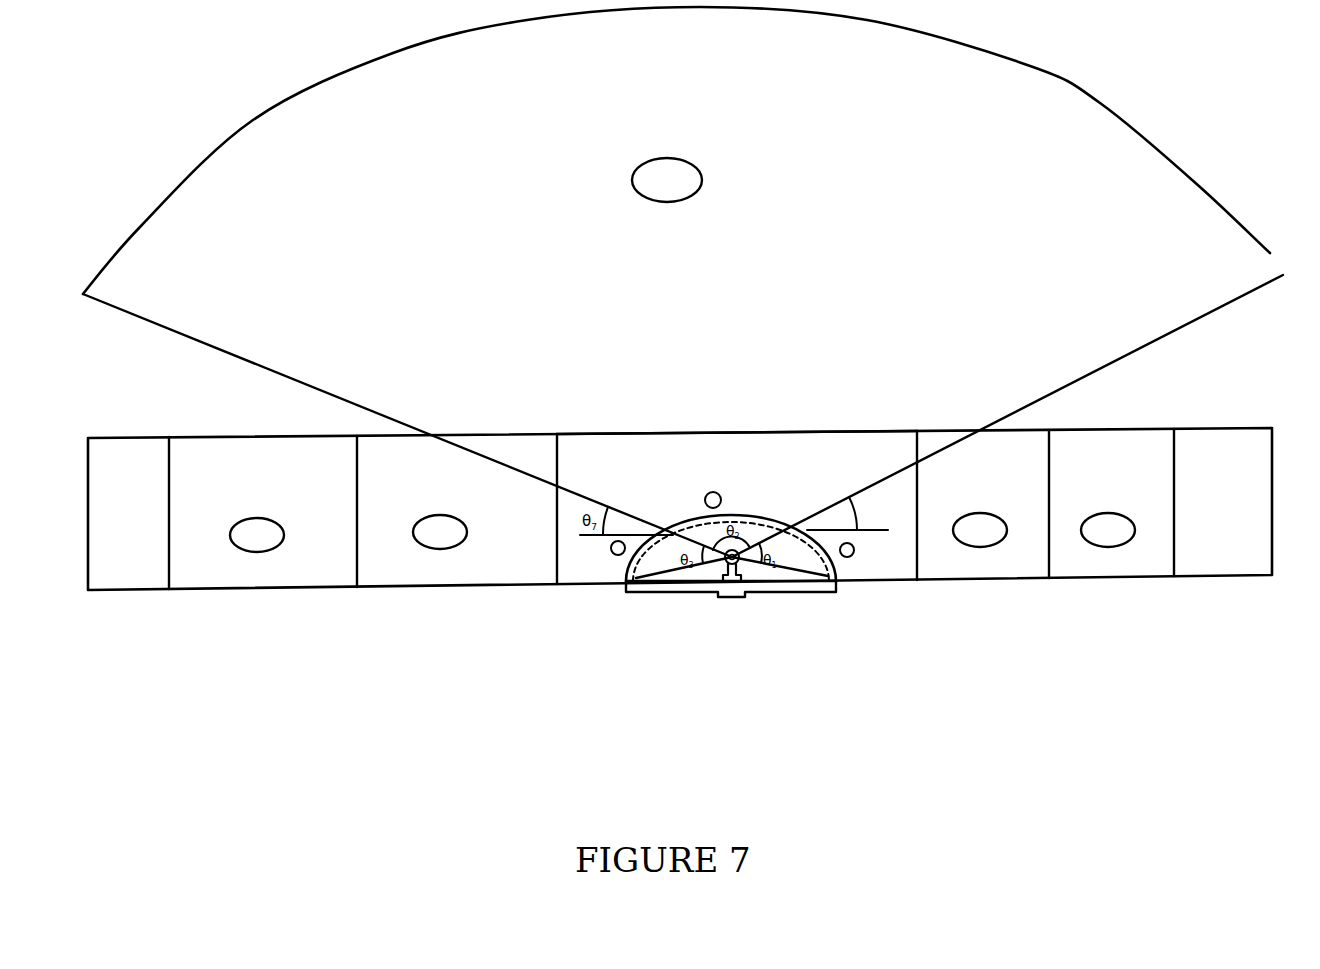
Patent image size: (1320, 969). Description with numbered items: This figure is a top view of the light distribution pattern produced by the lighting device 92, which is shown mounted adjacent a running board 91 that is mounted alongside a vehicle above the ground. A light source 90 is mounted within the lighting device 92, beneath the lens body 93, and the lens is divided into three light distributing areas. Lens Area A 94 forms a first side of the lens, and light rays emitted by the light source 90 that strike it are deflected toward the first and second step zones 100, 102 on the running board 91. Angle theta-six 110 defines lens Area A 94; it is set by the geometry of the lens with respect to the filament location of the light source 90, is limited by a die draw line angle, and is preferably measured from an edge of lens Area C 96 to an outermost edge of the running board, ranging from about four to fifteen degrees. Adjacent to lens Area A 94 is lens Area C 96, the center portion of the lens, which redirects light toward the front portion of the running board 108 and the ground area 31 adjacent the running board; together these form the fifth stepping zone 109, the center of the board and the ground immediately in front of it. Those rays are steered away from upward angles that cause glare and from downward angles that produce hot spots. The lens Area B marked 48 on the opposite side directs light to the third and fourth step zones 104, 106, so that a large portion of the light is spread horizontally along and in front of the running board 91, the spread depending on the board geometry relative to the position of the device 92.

The ground area 31 is at (750, 237).
The point B 48 is at (610, 554).
The light source 90 is at (729, 597).
The running board 91 is at (1238, 579).
The lighting device 92 is at (668, 636).
The dome housing 93 is at (834, 590).
The lens Area A 94 is at (854, 550).
The lens Area C 96 is at (719, 493).
The zone Z1 100 is at (988, 560).
The zone Z2 102 is at (1082, 492).
The zone Z3 104 is at (468, 557).
The zone Z4 106 is at (266, 566).
The front portion of the running board 108 is at (708, 433).
The zone Z5 109 is at (1100, 103).
The angle θ6 110 is at (866, 511).